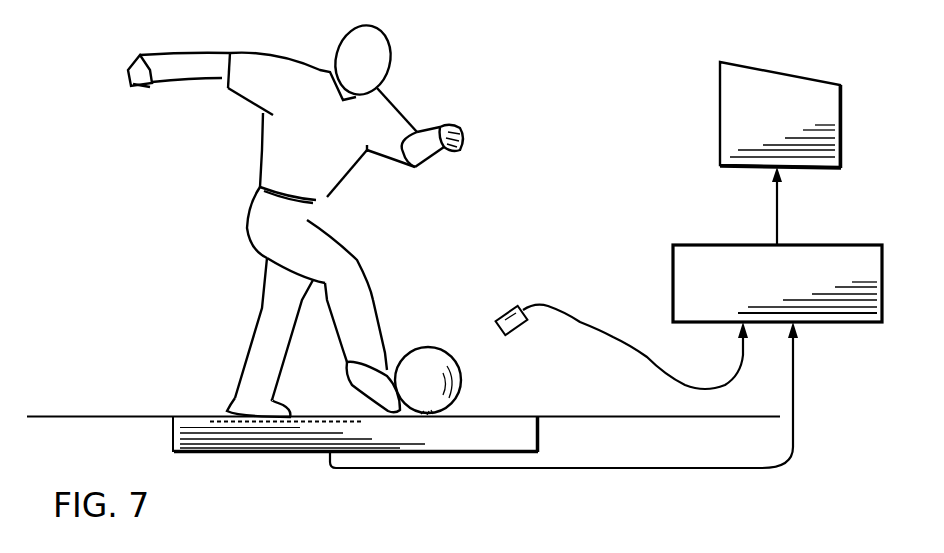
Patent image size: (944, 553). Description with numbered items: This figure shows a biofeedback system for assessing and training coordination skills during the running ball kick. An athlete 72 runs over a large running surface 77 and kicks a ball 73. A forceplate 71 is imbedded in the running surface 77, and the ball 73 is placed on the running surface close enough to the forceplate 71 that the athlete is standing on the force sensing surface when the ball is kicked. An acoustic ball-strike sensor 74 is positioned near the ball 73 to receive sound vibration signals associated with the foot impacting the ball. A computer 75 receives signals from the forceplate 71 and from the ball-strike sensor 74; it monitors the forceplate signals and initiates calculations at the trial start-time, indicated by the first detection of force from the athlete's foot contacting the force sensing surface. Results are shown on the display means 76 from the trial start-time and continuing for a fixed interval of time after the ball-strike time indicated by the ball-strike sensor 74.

The forceplate 71 is at (273, 418).
The athlete 72 is at (333, 235).
The ball 73 is at (430, 345).
The acoustic ball-strike sensor 74 is at (516, 332).
The computer 75 is at (832, 243).
The display means 76 is at (813, 75).
The running surface 77 is at (78, 415).